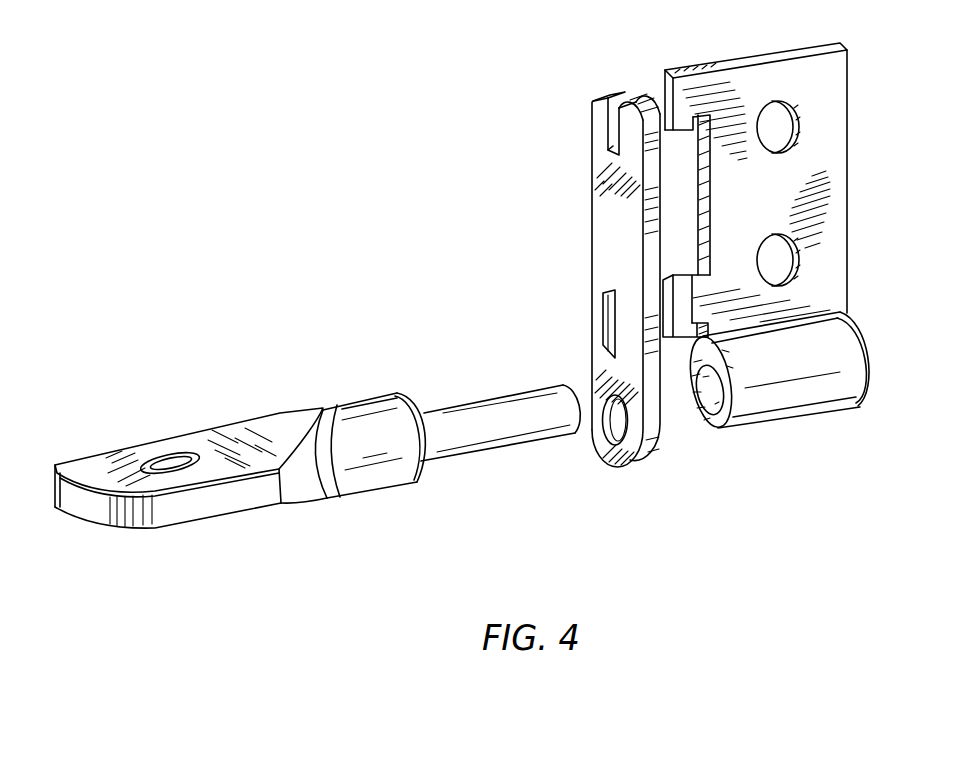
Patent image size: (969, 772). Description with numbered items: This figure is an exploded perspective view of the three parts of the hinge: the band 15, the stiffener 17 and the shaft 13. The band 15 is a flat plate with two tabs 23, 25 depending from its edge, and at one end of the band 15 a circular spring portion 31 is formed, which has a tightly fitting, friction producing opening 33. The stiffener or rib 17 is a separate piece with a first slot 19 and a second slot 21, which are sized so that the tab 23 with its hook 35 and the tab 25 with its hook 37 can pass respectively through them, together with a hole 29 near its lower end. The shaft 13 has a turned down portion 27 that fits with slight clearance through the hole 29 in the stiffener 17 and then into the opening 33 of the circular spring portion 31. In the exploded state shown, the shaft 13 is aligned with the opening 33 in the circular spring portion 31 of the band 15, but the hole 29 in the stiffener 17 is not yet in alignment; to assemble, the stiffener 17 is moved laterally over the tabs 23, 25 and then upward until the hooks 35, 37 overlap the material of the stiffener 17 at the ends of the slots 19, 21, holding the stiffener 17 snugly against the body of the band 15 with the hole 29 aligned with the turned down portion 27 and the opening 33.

The shaft 13 is at (337, 407).
The turned down portion 27 is at (473, 415).
The stiffener 17 is at (610, 208).
The second slot 21 is at (607, 130).
The first slot 19 is at (607, 328).
The hole 29 is at (608, 438).
The band 15 is at (703, 256).
The tab 25 is at (690, 80).
The hook 37 is at (680, 122).
The tab 23 is at (680, 297).
The hook 35 is at (677, 340).
The circular spring portion 31 is at (802, 397).
The opening 33 is at (711, 400).